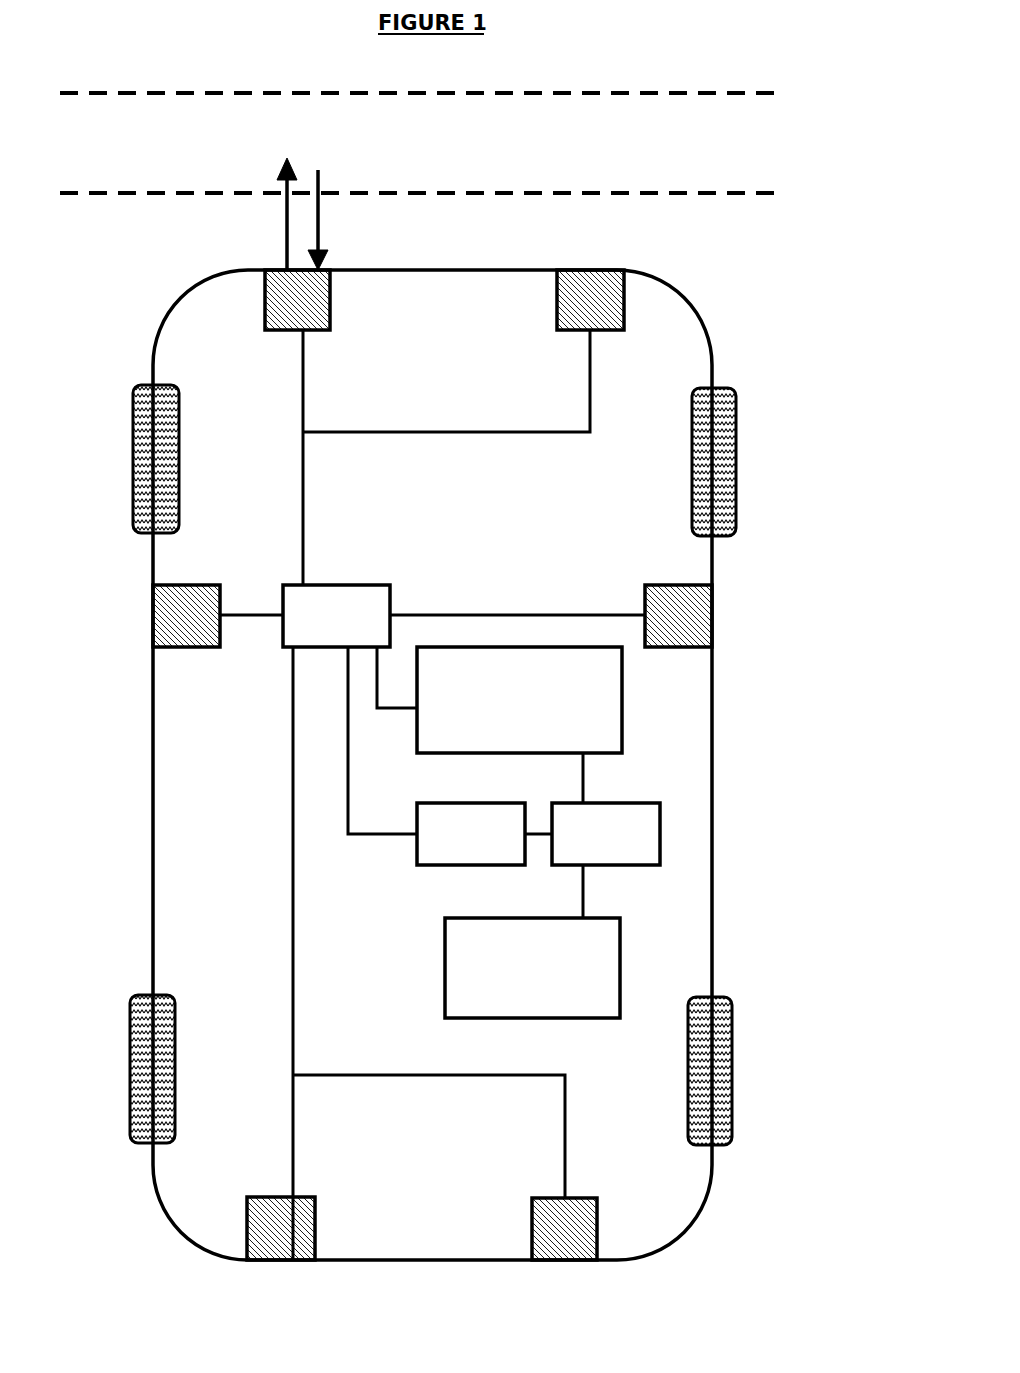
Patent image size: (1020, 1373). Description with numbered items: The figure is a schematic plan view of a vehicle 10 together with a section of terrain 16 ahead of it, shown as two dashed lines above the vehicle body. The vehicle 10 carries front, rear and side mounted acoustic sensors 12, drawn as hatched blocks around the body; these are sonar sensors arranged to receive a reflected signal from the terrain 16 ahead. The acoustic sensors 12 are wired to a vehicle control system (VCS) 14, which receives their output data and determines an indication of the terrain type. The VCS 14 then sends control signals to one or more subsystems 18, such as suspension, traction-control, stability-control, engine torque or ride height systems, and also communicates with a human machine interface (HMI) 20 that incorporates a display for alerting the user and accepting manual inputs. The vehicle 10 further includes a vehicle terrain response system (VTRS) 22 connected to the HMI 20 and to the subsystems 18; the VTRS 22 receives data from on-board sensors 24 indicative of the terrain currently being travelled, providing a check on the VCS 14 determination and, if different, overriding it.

The vehicle 10 is at (822, 352).
The acoustic sensors 12 is at (282, 293).
The vehicle control system (VCS) 14 is at (293, 585).
The terrain 16 is at (758, 156).
The subsystems 18 is at (622, 707).
The human machine interface (HMI) 20 is at (508, 802).
The vehicle terrain response system (VTRS) 22 is at (660, 836).
The on-board sensors 24 is at (620, 953).